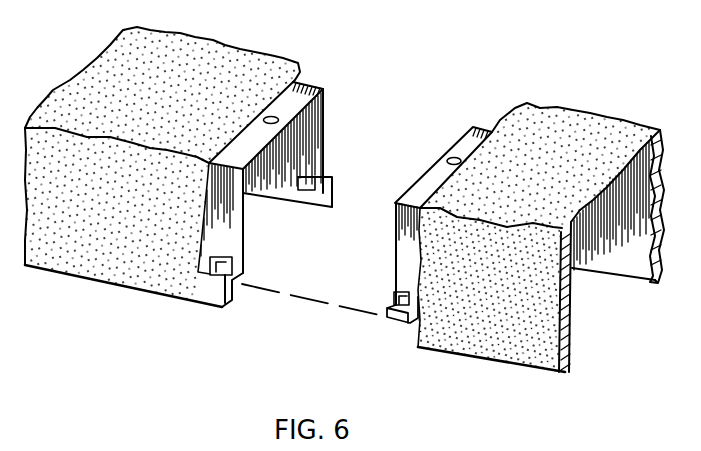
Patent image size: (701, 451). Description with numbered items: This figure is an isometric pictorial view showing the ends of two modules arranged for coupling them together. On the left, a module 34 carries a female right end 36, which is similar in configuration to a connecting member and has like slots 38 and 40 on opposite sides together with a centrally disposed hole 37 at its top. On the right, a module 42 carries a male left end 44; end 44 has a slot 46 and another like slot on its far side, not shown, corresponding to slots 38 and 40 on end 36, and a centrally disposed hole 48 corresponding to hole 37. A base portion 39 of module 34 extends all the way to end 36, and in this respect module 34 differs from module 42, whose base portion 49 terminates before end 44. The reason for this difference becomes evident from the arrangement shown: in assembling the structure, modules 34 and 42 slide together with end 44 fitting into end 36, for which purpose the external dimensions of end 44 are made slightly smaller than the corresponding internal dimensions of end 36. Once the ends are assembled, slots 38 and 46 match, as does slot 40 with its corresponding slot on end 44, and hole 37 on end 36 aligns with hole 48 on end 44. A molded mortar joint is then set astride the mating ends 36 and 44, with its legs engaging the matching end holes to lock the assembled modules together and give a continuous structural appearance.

The module 34 is at (154, 98).
The female right end 36 is at (300, 81).
The hole 37 is at (266, 115).
The slot 38 is at (218, 273).
The base portion 39 is at (82, 278).
The slot 40 is at (330, 175).
The module 42 is at (515, 183).
The male left end 44 is at (445, 154).
The slot 46 is at (392, 320).
The hole 48 is at (463, 152).
The base portion 49 is at (512, 363).